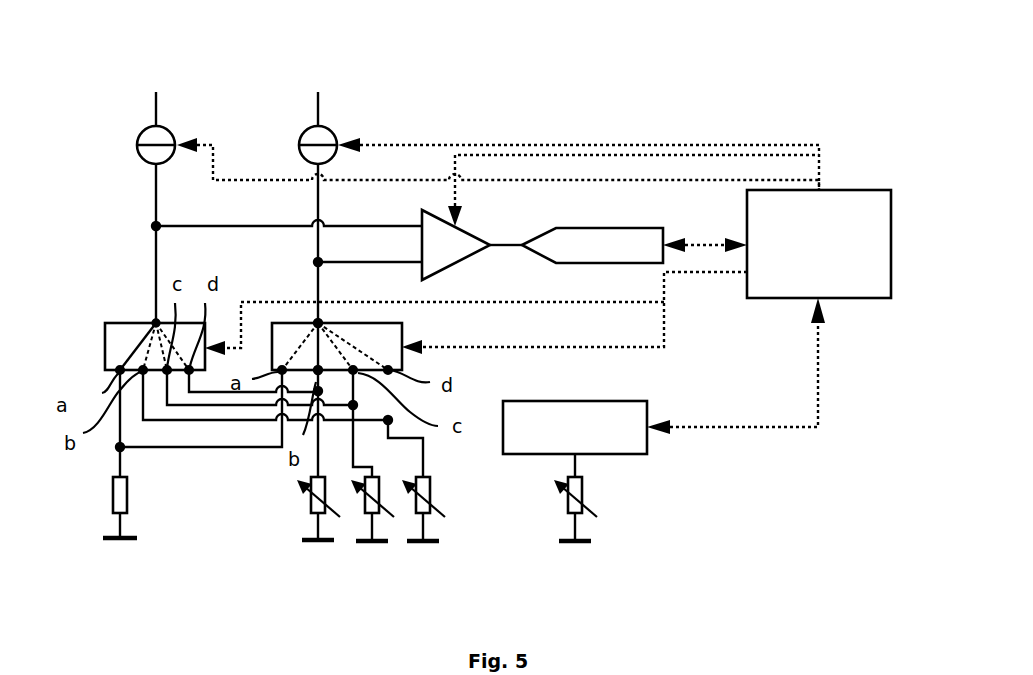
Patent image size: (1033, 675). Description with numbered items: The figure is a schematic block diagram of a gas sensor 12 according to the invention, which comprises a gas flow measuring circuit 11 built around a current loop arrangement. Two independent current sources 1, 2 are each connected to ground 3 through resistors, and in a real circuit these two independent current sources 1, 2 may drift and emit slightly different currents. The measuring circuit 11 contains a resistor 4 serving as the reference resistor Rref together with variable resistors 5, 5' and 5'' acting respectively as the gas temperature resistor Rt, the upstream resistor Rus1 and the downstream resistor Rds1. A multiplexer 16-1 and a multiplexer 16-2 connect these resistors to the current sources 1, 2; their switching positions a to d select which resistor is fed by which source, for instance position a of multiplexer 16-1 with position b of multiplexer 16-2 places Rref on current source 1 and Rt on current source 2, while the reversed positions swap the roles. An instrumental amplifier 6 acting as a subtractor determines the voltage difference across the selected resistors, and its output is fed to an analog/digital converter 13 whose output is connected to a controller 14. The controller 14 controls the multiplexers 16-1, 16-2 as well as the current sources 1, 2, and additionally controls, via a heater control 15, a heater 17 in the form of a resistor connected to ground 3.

The current source 1 is at (138, 142).
The current source 2 is at (302, 142).
The ground 3 is at (302, 540).
The resistor 4 is at (130, 505).
The variable resistor 5 is at (296, 508).
The variable resistor 5' is at (360, 539).
The variable resistor 5'' is at (448, 508).
The instrumental amplifier 6 is at (427, 227).
The gas flow measuring circuit 11 is at (450, 72).
The gas sensor 12 is at (200, 52).
The analog/digital converter 13 is at (587, 237).
The controller 14 is at (862, 197).
The heater control 15 is at (643, 442).
The multiplexer 16-1 is at (113, 340).
The multiplexer 16-2 is at (282, 340).
The heater 17 is at (583, 490).